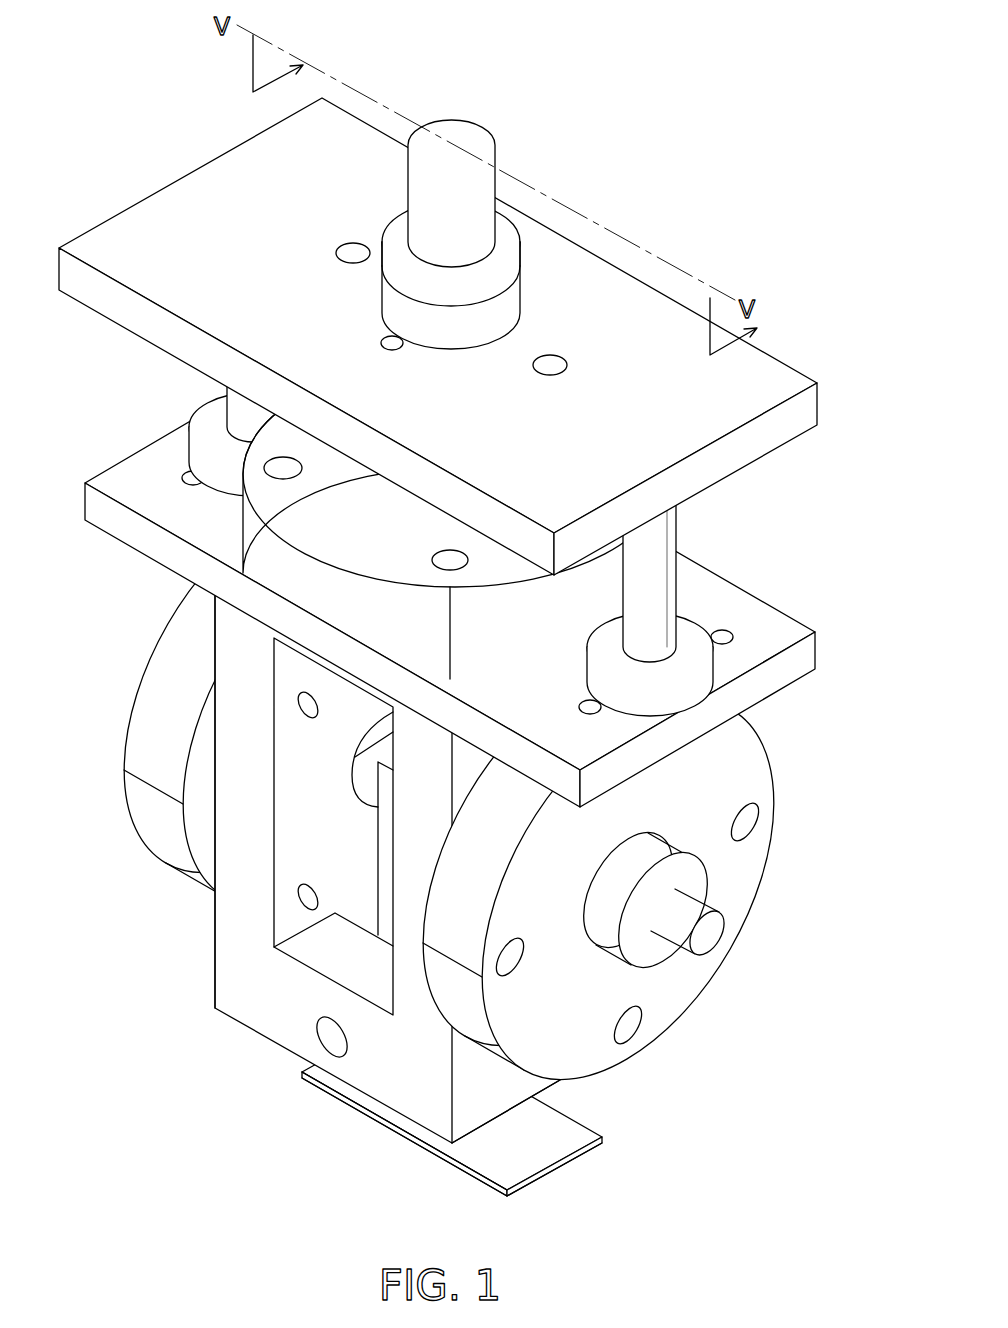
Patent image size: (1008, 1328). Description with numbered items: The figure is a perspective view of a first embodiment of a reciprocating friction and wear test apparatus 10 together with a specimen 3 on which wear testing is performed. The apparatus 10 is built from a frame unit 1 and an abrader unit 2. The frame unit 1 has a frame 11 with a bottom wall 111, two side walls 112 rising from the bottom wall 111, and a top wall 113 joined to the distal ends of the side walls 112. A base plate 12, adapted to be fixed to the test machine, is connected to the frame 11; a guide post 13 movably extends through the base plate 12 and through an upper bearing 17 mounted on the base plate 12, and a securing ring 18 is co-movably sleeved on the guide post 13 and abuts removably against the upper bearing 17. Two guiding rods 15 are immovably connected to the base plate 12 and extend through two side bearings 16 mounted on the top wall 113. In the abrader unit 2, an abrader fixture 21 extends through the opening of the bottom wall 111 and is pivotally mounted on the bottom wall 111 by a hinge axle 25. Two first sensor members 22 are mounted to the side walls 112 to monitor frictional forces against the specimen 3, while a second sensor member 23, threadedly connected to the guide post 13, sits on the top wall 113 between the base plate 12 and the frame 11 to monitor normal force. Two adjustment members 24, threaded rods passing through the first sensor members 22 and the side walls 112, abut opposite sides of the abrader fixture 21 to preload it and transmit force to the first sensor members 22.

The frame unit 1 is at (758, 282).
The abrader unit 2 is at (728, 1035).
The specimen 3 is at (500, 1172).
The reciprocating friction and wear test apparatus 10 is at (708, 140).
The frame 11 is at (484, 1125).
The bottom wall 111 is at (415, 1125).
The side walls 112 is at (210, 908).
The top wall 113 is at (740, 600).
The base plate 12 is at (770, 373).
The guide post 13 is at (490, 140).
The guiding rods 15 is at (230, 398).
The side bearings 16 is at (192, 428).
The upper bearing 17 is at (512, 307).
The securing ring 18 is at (520, 258).
The abrader fixture 21 is at (387, 918).
The first sensor members 22 is at (175, 650).
The second sensor member 23 is at (450, 549).
The adjustment members 24 is at (710, 938).
The hinge axle 25 is at (330, 1040).